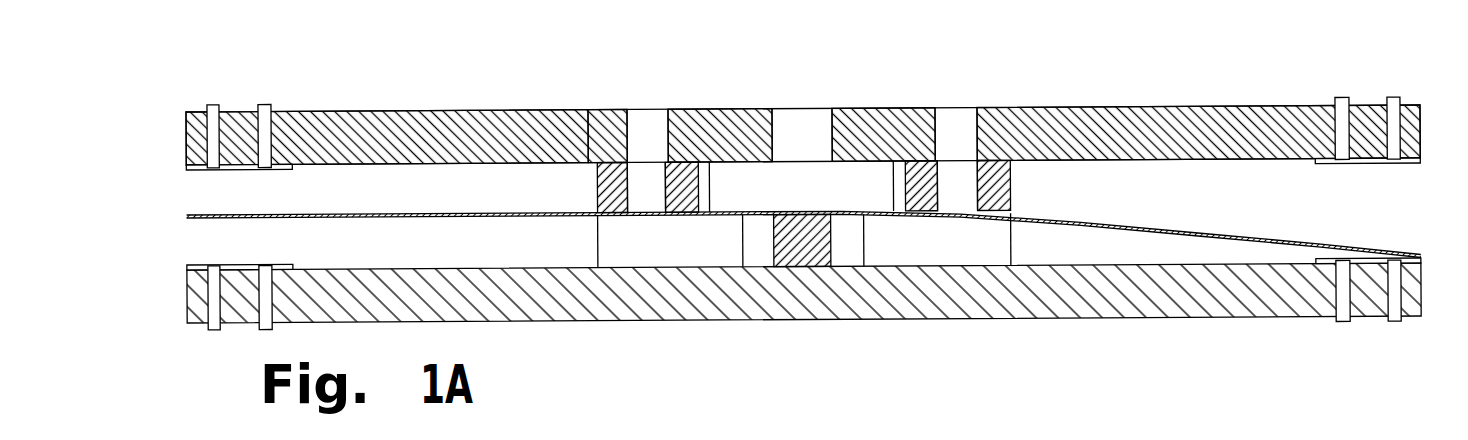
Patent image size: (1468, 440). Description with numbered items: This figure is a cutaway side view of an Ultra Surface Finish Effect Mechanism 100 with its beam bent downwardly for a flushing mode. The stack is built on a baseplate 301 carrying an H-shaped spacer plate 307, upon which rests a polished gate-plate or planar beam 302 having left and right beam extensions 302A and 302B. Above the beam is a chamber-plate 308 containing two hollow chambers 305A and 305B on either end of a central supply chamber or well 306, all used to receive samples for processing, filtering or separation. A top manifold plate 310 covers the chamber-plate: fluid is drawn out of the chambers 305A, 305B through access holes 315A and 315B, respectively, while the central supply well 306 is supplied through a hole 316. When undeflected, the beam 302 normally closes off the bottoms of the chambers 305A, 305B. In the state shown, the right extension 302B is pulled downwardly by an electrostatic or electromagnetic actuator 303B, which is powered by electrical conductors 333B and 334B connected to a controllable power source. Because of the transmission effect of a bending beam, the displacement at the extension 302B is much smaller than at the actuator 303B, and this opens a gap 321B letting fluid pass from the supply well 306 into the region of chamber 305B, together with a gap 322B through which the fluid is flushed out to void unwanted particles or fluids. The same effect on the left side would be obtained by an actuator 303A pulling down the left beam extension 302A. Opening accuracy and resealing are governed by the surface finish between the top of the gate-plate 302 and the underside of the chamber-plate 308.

The Ultra Surface Finish Effect Mechanism 100 is at (817, 222).
The baseplate 301 is at (653, 305).
The polished gate-plate or planar beam 302 is at (887, 229).
The left beam extension 302A is at (368, 218).
The right beam extension 302B is at (1113, 231).
The actuator 303A is at (260, 265).
The electrostatic or electromagnetic actuator 303B is at (1337, 265).
The hollow chamber 305A is at (577, 154).
The hollow chamber 305B is at (962, 194).
The supply chamber or well 306 is at (752, 190).
The H-shaped spacer plate 307 is at (810, 261).
The chamber-plate 308 is at (647, 189).
The top manifold plate 310 is at (890, 111).
The access hole 315A is at (652, 133).
The access hole 315B is at (953, 134).
The hole 316 is at (815, 136).
The gap 321B is at (912, 219).
The gap 322B is at (1000, 219).
The electrical conductor 333B is at (1330, 329).
The electrical conductor 334B is at (1406, 329).